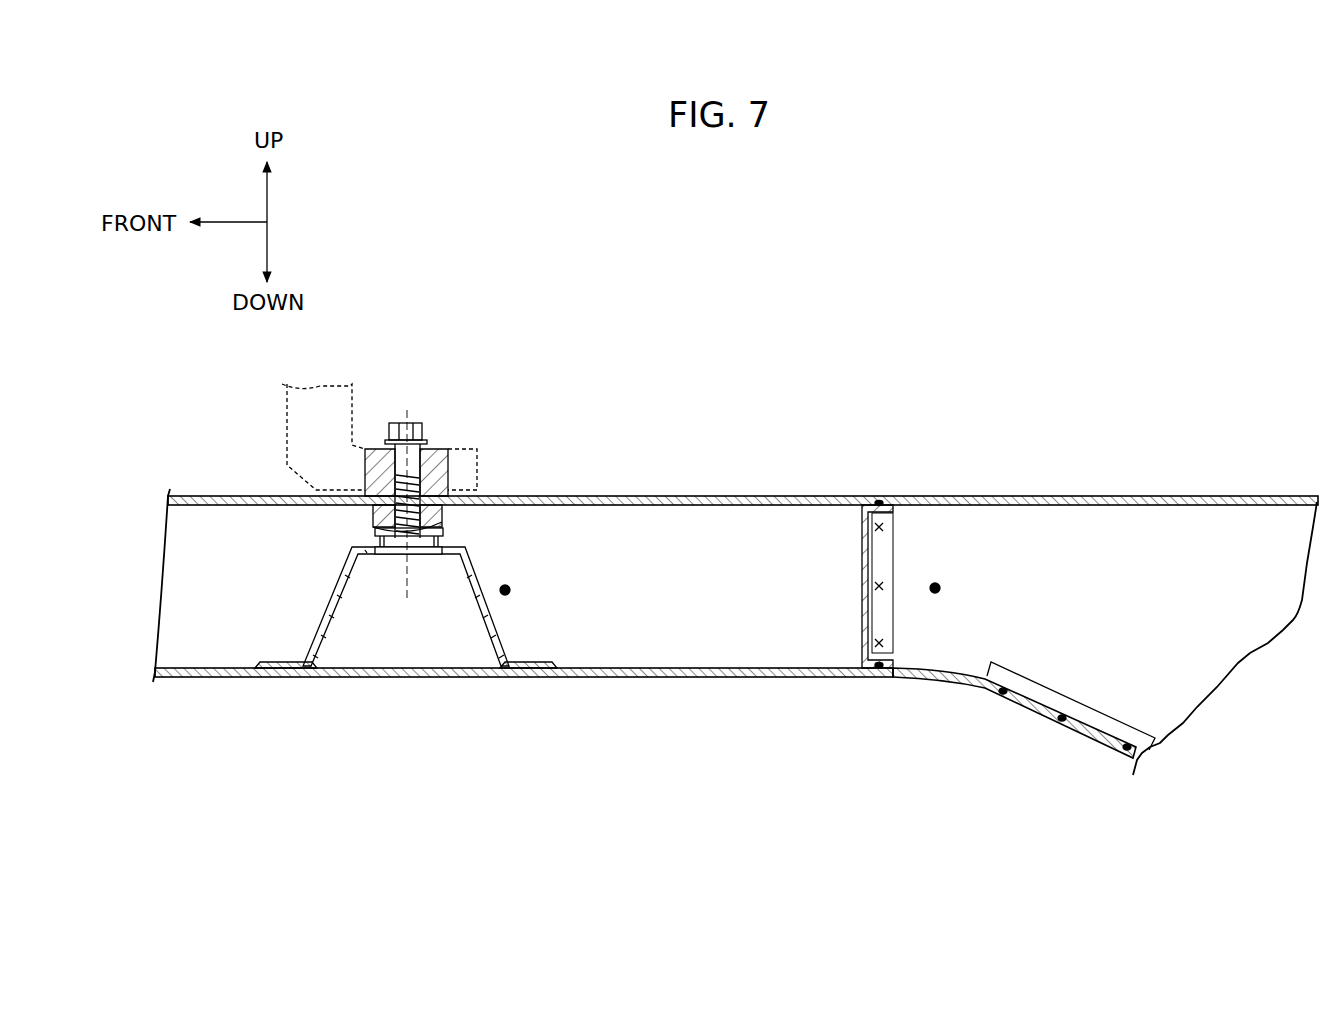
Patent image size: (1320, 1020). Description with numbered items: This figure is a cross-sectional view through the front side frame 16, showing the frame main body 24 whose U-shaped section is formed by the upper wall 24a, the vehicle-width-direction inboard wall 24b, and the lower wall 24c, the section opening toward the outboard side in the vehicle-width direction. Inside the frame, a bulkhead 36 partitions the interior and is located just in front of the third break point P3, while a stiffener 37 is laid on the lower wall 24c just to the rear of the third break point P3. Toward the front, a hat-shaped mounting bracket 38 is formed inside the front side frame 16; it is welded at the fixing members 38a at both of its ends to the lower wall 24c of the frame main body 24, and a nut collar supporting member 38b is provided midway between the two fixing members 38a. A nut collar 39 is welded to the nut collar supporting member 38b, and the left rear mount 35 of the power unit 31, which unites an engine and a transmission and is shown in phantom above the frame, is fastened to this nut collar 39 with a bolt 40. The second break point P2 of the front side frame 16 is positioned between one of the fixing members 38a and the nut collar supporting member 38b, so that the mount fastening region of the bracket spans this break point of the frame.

The front side frame 16 is at (735, 565).
The frame main body 24 is at (735, 590).
The upper wall 24a is at (593, 496).
The vehicle-width-direction inboard wall 24b is at (697, 628).
The lower wall 24c is at (773, 677).
The power unit 31 is at (285, 450).
The left rear mount 35 is at (433, 449).
The bulkhead 36 is at (862, 592).
The stiffener 37 is at (1060, 700).
The mounting bracket 38 is at (410, 607).
The fixing member 38a is at (280, 661).
The nut collar supporting member 38b is at (388, 554).
The nut collar 39 is at (443, 534).
The bolt 40 is at (402, 423).
The second break point P2 is at (511, 584).
The third break point P3 is at (941, 582).